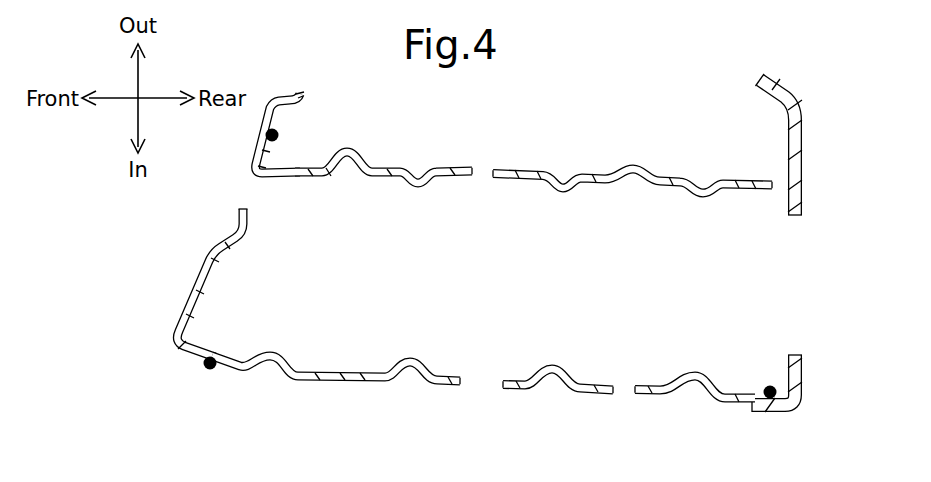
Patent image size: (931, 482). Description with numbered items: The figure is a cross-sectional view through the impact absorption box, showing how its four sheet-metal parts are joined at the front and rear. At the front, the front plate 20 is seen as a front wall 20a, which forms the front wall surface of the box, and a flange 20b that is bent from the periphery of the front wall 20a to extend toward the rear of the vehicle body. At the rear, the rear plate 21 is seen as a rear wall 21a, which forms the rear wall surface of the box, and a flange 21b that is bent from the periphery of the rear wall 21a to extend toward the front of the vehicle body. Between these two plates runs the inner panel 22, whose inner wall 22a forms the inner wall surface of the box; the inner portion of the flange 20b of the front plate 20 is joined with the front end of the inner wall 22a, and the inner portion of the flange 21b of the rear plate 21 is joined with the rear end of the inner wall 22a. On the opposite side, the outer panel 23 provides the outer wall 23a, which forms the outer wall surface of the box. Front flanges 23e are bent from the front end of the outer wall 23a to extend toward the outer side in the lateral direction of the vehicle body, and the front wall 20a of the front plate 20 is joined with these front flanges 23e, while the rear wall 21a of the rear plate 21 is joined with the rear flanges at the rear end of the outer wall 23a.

The front plate 20 is at (270, 96).
The front wall 20a is at (215, 246).
The flange 20b is at (179, 352).
The rear plate 21 is at (797, 272).
The rear wall 21a is at (840, 186).
The flange 21b is at (785, 89).
The inner panel 22 is at (354, 372).
The inner wall 22a is at (368, 383).
The outer panel 23 is at (397, 164).
The outer wall 23a is at (514, 172).
The front flanges 23e is at (267, 150).